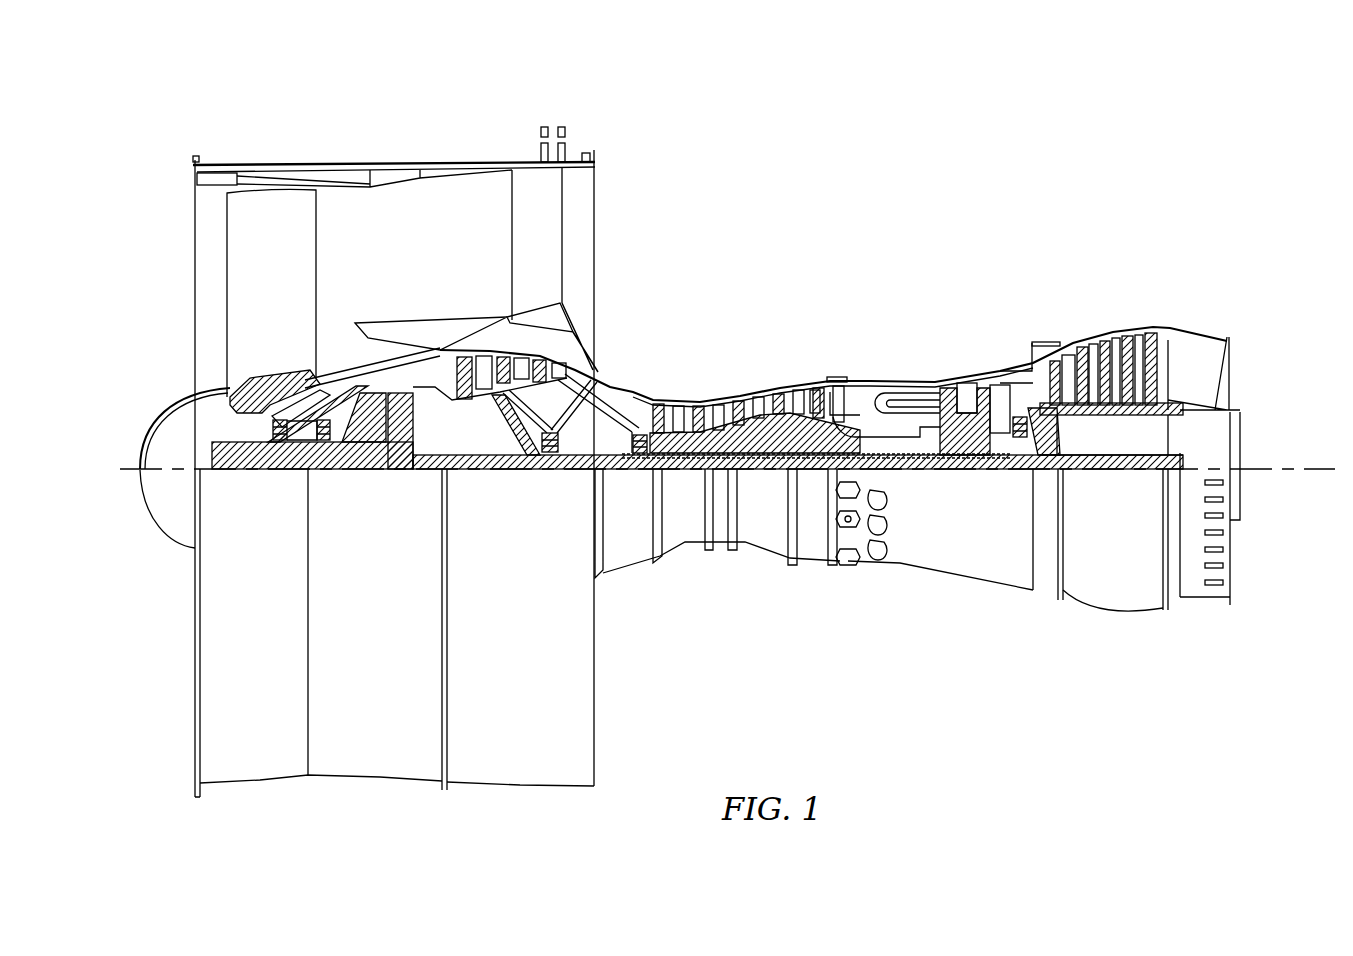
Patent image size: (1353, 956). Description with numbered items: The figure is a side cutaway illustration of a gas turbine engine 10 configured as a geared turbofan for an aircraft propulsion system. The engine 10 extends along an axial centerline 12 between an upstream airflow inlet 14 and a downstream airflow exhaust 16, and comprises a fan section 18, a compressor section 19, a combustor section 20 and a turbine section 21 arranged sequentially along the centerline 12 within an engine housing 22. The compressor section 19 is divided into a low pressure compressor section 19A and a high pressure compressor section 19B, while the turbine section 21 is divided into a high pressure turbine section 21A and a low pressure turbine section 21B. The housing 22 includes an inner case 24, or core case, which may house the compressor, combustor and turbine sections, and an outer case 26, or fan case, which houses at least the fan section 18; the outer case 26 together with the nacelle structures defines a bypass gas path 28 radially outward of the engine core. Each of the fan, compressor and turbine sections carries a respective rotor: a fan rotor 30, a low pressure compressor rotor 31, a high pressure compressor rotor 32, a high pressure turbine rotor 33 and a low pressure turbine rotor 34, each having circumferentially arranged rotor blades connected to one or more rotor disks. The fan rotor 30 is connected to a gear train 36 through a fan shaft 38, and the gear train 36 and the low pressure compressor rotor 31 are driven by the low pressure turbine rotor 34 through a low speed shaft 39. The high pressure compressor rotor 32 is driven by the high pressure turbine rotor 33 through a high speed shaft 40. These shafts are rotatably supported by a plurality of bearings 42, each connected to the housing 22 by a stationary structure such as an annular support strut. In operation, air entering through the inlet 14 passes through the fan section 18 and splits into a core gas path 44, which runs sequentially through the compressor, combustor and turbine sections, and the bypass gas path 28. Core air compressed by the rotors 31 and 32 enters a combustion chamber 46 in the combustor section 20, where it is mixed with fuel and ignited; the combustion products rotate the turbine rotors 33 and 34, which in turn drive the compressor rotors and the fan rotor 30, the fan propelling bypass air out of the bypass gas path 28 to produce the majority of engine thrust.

The gas turbine engine 10 is at (165, 150).
The axial centerline 12 is at (1284, 467).
The upstream airflow inlet 14 is at (195, 236).
The downstream airflow exhaust 16 is at (1232, 372).
The fan section 18 is at (360, 140).
The compressor section 19 is at (808, 80).
The low pressure compressor section 19A is at (593, 126).
The high pressure compressor section 19B is at (808, 313).
The combustor section 20 is at (932, 313).
The turbine section 21 is at (1190, 245).
The high pressure turbine section 21A is at (1012, 313).
The low pressure turbine section 21B is at (1190, 313).
The engine housing 22 is at (622, 586).
The inner case 24 is at (811, 566).
The outer case 26 is at (545, 788).
The bypass gas path 28 is at (448, 252).
The fan rotor 30 is at (207, 398).
The low pressure compressor rotor 31 is at (506, 428).
The high pressure compressor rotor 32 is at (760, 432).
The high pressure turbine rotor 33 is at (960, 450).
The low pressure turbine rotor 34 is at (1106, 417).
The gear train 36 is at (400, 470).
The fan shaft 38 is at (264, 470).
The low speed shaft 39 is at (1112, 471).
The high speed shaft 40 is at (903, 464).
The bearings 42 is at (320, 442).
The core gas path 44 is at (620, 392).
The combustion chamber 46 is at (892, 402).